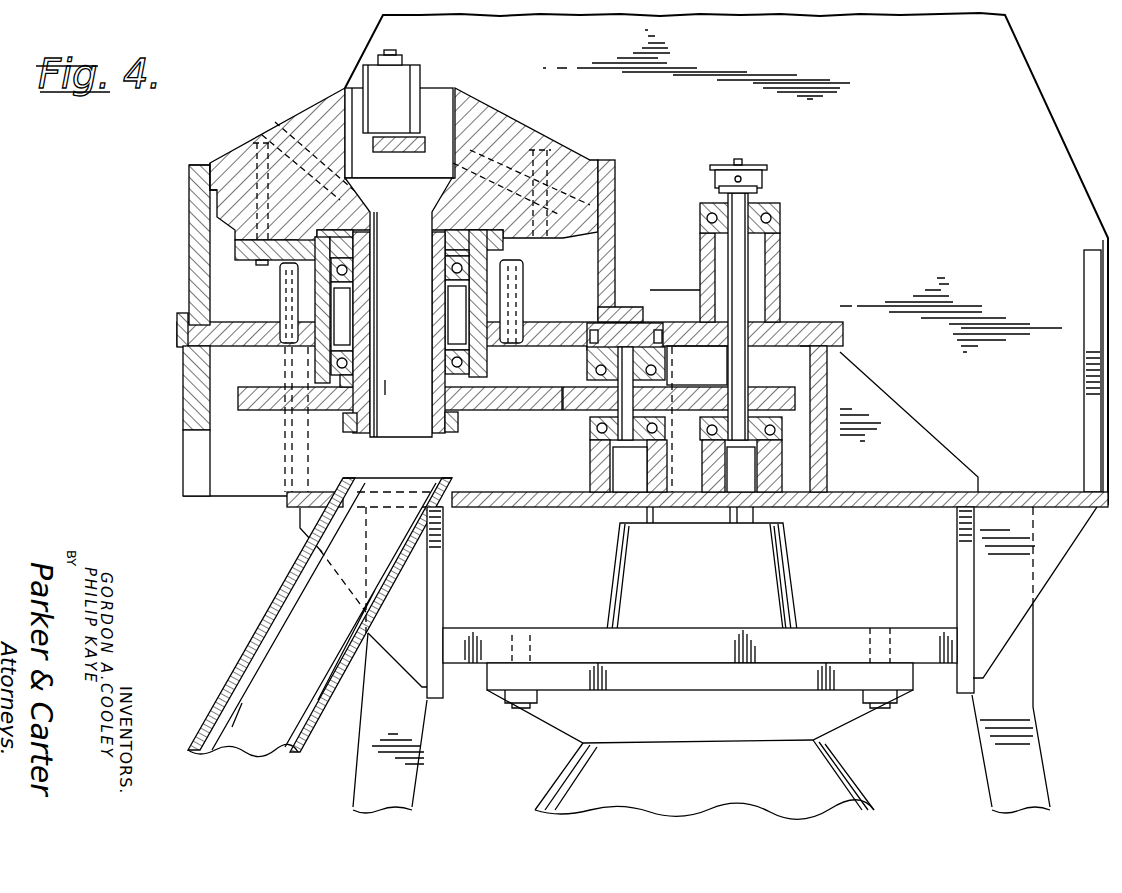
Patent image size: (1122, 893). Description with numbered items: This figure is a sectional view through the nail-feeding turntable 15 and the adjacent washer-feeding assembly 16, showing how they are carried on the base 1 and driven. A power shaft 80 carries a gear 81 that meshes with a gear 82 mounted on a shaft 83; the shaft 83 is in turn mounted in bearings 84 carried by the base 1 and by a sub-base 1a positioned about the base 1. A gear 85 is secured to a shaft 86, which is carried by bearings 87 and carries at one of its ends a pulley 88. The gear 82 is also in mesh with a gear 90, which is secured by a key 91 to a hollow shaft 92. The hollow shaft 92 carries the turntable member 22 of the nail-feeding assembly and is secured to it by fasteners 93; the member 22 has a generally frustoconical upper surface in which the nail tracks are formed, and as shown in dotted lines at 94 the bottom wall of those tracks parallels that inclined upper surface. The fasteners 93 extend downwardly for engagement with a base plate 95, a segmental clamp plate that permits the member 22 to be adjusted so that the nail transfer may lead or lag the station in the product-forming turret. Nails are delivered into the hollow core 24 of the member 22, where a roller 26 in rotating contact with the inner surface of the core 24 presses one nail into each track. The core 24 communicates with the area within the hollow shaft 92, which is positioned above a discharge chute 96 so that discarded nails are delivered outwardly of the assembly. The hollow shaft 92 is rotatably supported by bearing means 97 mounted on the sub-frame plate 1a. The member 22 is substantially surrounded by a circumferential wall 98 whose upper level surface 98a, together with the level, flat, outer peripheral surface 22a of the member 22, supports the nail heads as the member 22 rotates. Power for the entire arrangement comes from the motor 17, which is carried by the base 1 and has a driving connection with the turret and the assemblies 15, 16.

The base 1 is at (282, 516).
The sub-base 1a is at (800, 323).
The nail-feeding turntable 15 is at (590, 161).
The washer-feeding assembly 16 is at (792, 193).
The motor 17 is at (851, 776).
The turntable member 22 is at (305, 107).
The peripheral surface 22a is at (210, 162).
The hollow core 24 is at (440, 90).
The roller 26 is at (362, 72).
The power shaft 80 is at (682, 320).
The gear 81 is at (797, 386).
The gear 82 is at (581, 411).
The shaft 83 is at (624, 441).
The bearings 84 is at (594, 366).
The gear 85 is at (705, 393).
The shaft 86 is at (749, 276).
The bearings 87 is at (781, 223).
The pulley 88 is at (770, 172).
The gear 90 is at (522, 410).
The key 91 is at (453, 420).
The hollow shaft 92 is at (383, 434).
The fasteners 93 is at (257, 142).
The bottom wall of tracks 94 is at (283, 130).
The base plate 95 is at (244, 262).
The discharge chute 96 is at (249, 649).
The bearing means 97 is at (333, 365).
The circumferential wall 98 is at (189, 231).
The upper level surface 98a is at (190, 164).